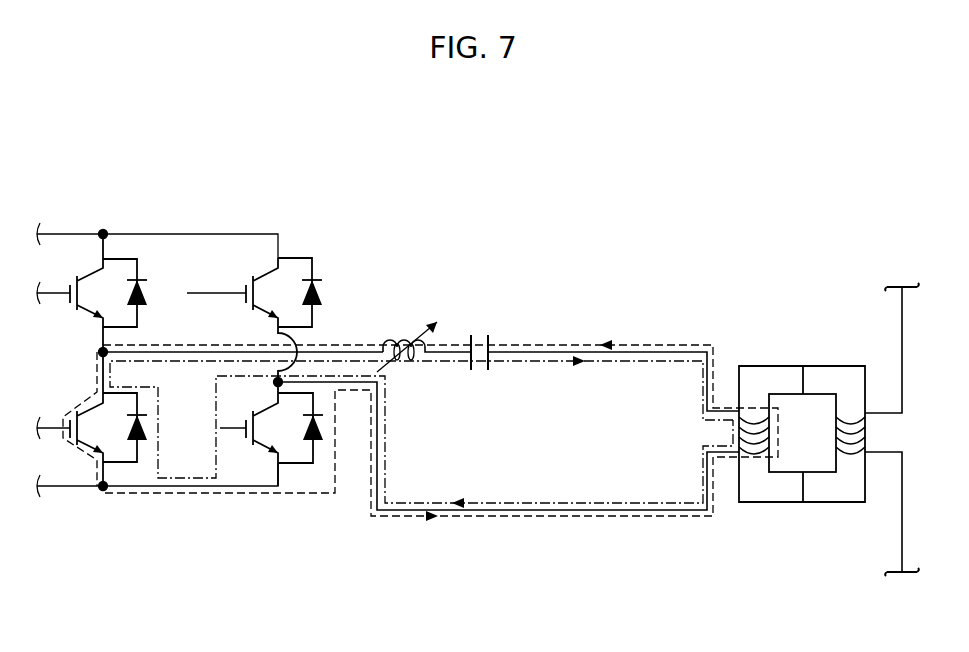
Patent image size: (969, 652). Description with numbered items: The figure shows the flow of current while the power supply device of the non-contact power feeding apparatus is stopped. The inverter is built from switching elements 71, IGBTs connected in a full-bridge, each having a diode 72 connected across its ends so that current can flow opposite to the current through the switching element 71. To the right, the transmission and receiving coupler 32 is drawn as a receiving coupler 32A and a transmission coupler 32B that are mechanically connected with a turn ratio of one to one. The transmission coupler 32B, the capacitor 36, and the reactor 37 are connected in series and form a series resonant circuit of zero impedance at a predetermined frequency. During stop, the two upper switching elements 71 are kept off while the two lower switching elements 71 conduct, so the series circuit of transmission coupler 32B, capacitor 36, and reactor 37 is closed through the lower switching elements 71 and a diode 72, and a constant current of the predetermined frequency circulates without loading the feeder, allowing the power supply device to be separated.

The switching element 71 is at (73, 303).
The diode 72 is at (152, 292).
The reactor 37 is at (403, 340).
The capacitor 36 is at (478, 340).
The transmission and receiving coupler 32 is at (802, 424).
The receiving coupler 32A is at (840, 488).
The transmission coupler 32B is at (770, 488).